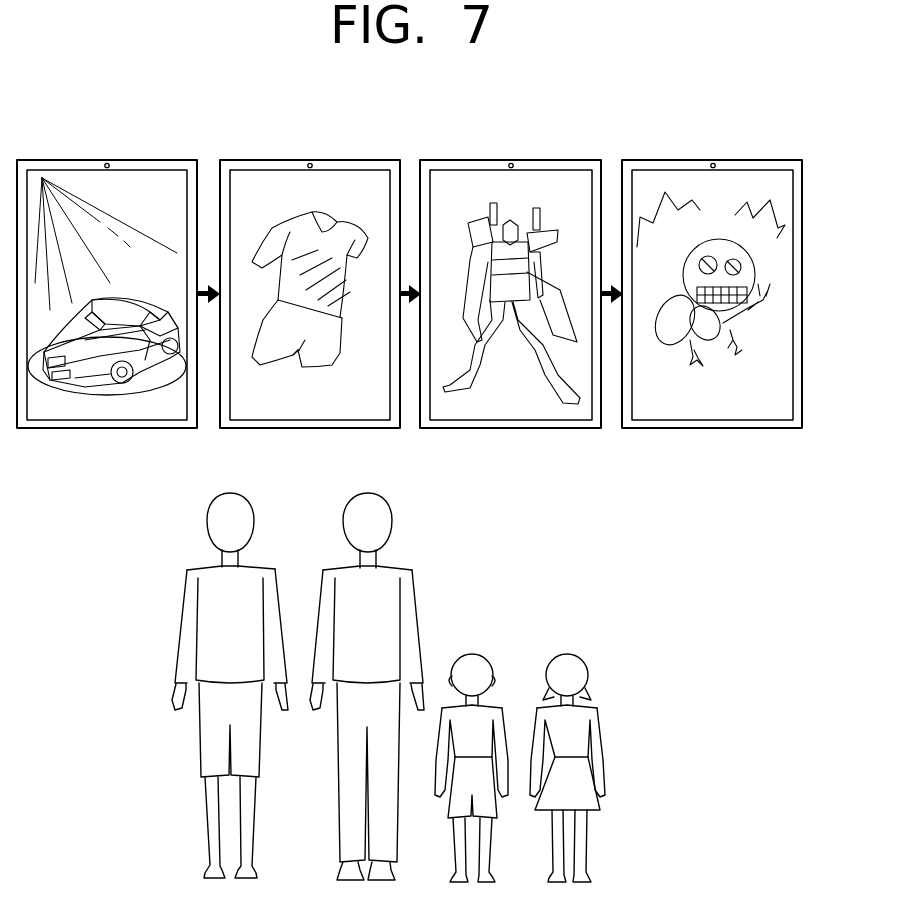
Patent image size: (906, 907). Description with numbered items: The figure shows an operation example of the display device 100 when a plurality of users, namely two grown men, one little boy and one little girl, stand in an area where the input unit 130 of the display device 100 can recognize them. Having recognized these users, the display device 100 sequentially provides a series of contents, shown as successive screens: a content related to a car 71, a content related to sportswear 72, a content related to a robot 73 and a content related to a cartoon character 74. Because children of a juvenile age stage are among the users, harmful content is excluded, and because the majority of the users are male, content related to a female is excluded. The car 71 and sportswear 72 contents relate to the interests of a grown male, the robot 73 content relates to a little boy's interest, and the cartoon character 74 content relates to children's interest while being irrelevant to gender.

The display device 100 is at (40, 165).
The input unit 130 is at (108, 162).
The content related to a car 71 is at (155, 175).
The content related to sportswear 72 is at (373, 180).
The content related to a robot 73 is at (573, 178).
The content related to a cartoon character 74 is at (763, 178).